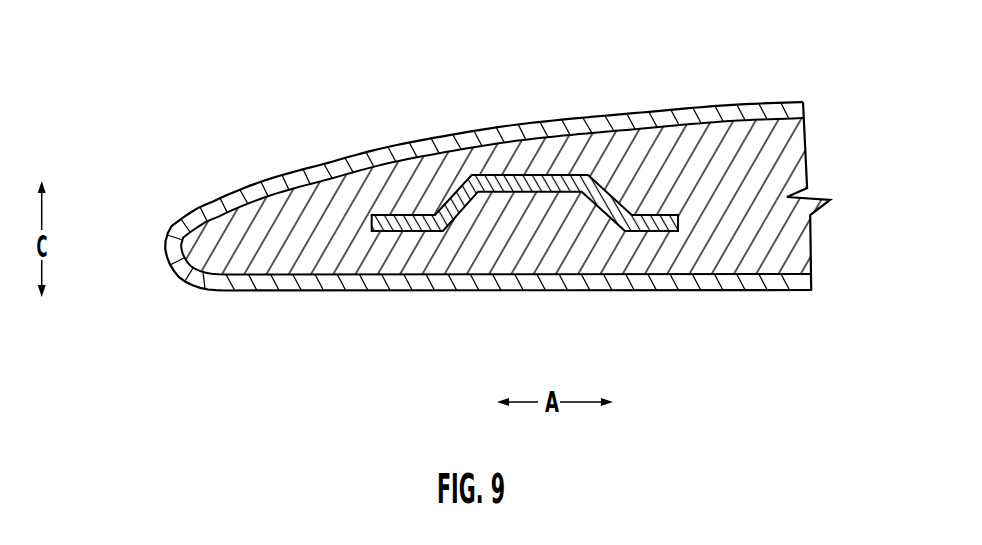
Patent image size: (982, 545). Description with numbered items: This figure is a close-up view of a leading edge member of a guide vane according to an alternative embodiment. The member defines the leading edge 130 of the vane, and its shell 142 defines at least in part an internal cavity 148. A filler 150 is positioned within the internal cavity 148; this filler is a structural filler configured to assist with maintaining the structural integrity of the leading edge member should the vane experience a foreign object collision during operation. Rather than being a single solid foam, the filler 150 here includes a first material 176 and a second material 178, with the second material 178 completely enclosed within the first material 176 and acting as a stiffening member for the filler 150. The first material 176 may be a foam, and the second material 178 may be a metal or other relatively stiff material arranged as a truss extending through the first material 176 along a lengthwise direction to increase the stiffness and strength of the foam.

The leading edge 130 is at (467, 204).
The shell 142 is at (555, 128).
The internal cavity 148 is at (316, 184).
The filler 150 is at (691, 137).
The first material 176 is at (711, 247).
The second material 178 is at (510, 183).